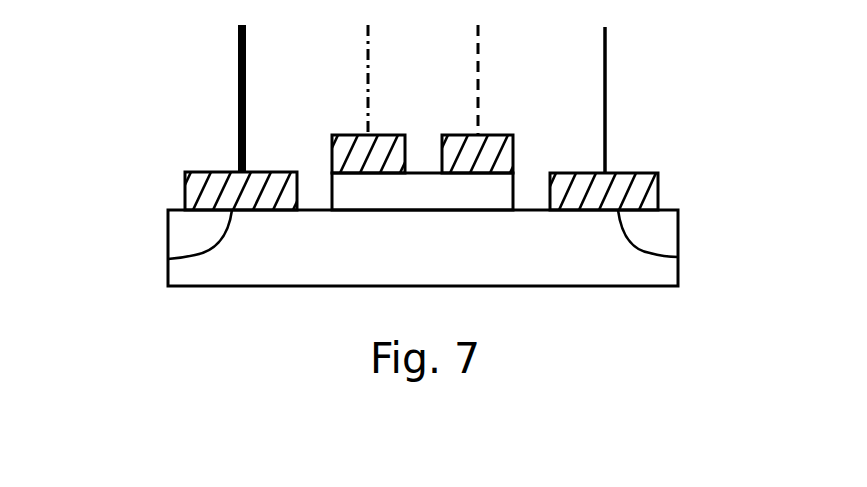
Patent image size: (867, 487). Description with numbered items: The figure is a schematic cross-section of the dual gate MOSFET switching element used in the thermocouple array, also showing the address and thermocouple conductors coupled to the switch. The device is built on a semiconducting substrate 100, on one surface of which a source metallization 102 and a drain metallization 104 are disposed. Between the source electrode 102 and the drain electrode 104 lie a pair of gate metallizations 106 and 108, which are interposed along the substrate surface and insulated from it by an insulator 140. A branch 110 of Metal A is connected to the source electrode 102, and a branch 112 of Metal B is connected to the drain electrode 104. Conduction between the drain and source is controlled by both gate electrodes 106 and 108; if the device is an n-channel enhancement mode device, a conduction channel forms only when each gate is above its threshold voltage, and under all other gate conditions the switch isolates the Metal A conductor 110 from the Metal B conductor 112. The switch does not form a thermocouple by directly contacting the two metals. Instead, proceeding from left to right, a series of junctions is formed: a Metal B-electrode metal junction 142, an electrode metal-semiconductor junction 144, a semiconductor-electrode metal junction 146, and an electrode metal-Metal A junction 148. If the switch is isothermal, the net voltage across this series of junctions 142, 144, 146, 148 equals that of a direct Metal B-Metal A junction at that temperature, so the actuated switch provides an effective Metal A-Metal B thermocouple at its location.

The semiconducting substrate 100 is at (453, 278).
The source metallization 102 is at (653, 192).
The drain metallization 104 is at (183, 185).
The gate metallization 106 is at (505, 153).
The gate metallization 108 is at (332, 147).
The branch of Metal A 110 is at (615, 78).
The branch of Metal B 112 is at (230, 72).
The insulator 140 is at (443, 206).
The Metal B-electrode metal junction 142 is at (225, 157).
The electrode metal-semiconductor junction 144 is at (168, 259).
The semiconductor-electrode metal junction 146 is at (678, 257).
The electrode metal-Metal A junction 148 is at (613, 171).